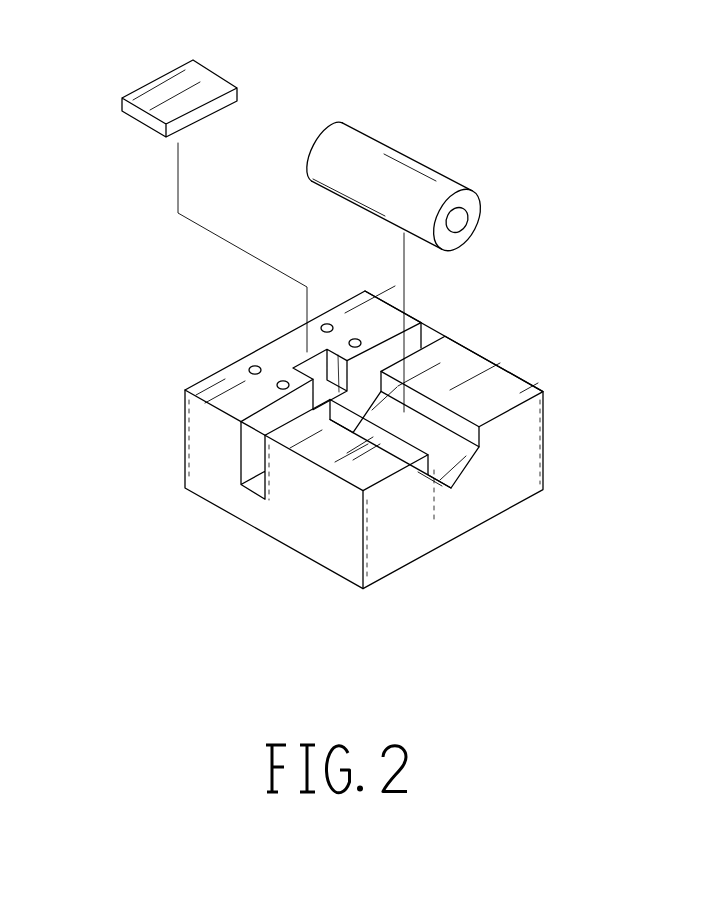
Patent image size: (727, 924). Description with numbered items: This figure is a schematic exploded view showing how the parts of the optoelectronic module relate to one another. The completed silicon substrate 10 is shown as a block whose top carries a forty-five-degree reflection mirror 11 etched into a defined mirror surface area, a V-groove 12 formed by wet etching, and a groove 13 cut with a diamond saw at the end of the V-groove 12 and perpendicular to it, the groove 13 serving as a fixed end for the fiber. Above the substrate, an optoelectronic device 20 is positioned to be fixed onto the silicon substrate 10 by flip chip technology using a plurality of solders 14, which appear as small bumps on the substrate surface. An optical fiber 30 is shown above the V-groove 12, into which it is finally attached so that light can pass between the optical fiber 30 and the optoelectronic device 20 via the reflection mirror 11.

The silicon substrate 10 is at (158, 364).
The 45-degree reflection mirror 11 is at (294, 367).
The V-groove 12 is at (478, 447).
The groove 13 is at (253, 452).
The solders 14 is at (331, 322).
The optoelectronic device 20 is at (160, 88).
The optical fiber 30 is at (437, 172).